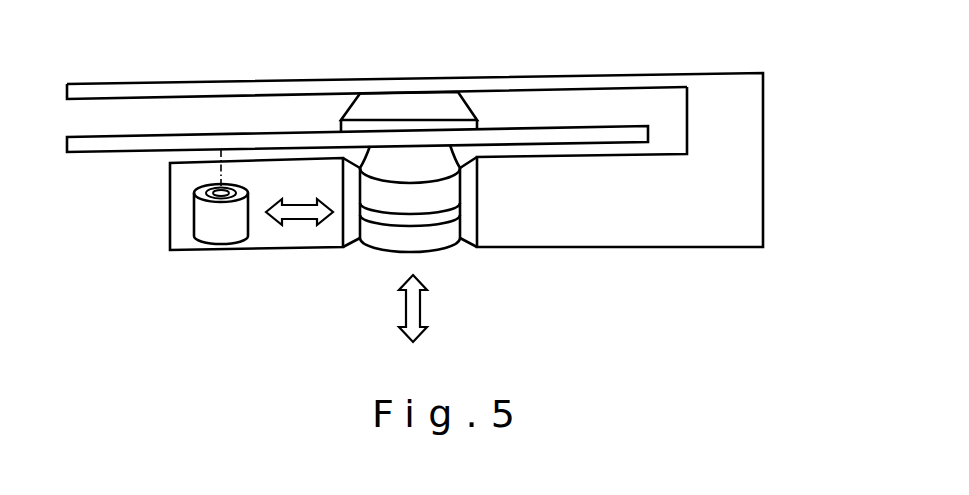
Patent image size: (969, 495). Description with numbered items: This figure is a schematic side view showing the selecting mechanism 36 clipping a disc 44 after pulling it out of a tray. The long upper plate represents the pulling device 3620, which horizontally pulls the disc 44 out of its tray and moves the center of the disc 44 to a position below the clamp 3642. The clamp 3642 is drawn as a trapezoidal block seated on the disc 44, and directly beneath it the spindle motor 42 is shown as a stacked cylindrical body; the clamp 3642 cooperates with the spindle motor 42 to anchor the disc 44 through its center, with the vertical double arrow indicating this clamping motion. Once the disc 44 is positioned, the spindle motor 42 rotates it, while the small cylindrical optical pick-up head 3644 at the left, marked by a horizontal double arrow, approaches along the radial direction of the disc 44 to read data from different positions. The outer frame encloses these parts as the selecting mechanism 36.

The selecting mechanism 36 is at (788, 109).
The pulling device 3620 is at (272, 90).
The clamp 3642 is at (452, 108).
The optical pick-up head 3644 is at (221, 228).
The disc 44 is at (100, 143).
The spindle motor 42 is at (432, 240).